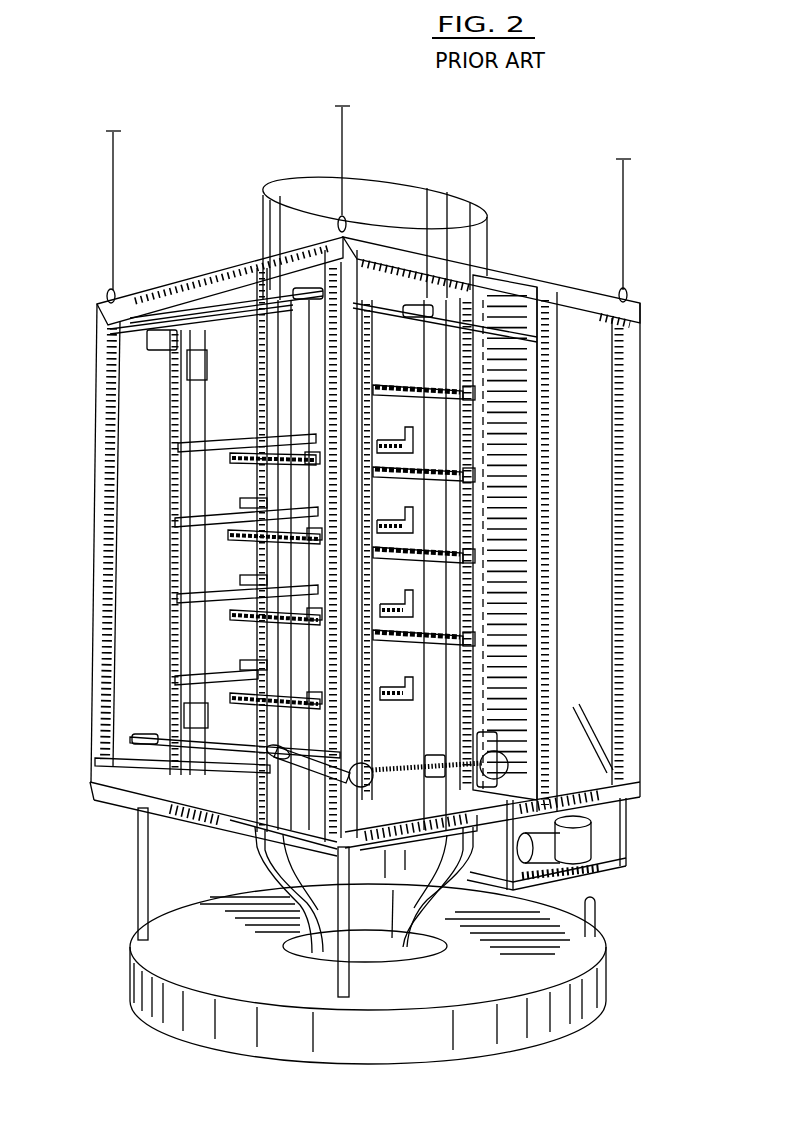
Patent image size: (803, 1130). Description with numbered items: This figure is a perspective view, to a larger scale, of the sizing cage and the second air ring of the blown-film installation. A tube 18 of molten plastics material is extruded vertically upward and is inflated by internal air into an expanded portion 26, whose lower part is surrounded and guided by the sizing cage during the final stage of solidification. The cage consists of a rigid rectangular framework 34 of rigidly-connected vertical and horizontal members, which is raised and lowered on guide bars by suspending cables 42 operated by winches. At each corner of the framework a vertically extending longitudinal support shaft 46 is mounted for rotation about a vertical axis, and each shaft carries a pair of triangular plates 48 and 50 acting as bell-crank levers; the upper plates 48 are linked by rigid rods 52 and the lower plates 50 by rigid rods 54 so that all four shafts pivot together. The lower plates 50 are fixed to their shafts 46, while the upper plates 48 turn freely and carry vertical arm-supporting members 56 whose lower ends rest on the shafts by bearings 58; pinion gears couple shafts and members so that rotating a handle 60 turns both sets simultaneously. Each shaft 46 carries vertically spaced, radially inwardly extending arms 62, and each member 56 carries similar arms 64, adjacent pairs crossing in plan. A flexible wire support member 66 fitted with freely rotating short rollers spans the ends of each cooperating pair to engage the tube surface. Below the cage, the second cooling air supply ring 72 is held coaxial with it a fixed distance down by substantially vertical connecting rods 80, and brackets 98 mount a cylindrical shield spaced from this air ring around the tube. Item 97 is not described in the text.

The tube 18 is at (420, 955).
The expanded portion 26 is at (418, 182).
The rigid rectangular framework 34 is at (632, 510).
The suspending cables 42 is at (113, 177).
The longitudinal support shaft 46 is at (195, 473).
The upper triangular plate 48 is at (140, 347).
The lower triangular plate 50 is at (167, 737).
The rigid rods 52 is at (238, 290).
The rigid rods 54 is at (240, 775).
The arm-supporting member 56 is at (175, 394).
The bearings 58 is at (140, 803).
The handle 60 is at (293, 752).
The arms 62 is at (218, 456).
The arms 64 is at (222, 437).
The flexible wire support member 66 is at (388, 381).
The second cooling air supply ring 72 is at (545, 1030).
The connecting rods 80 is at (333, 988).
The motor 97 is at (627, 845).
The brackets 98 is at (590, 705).